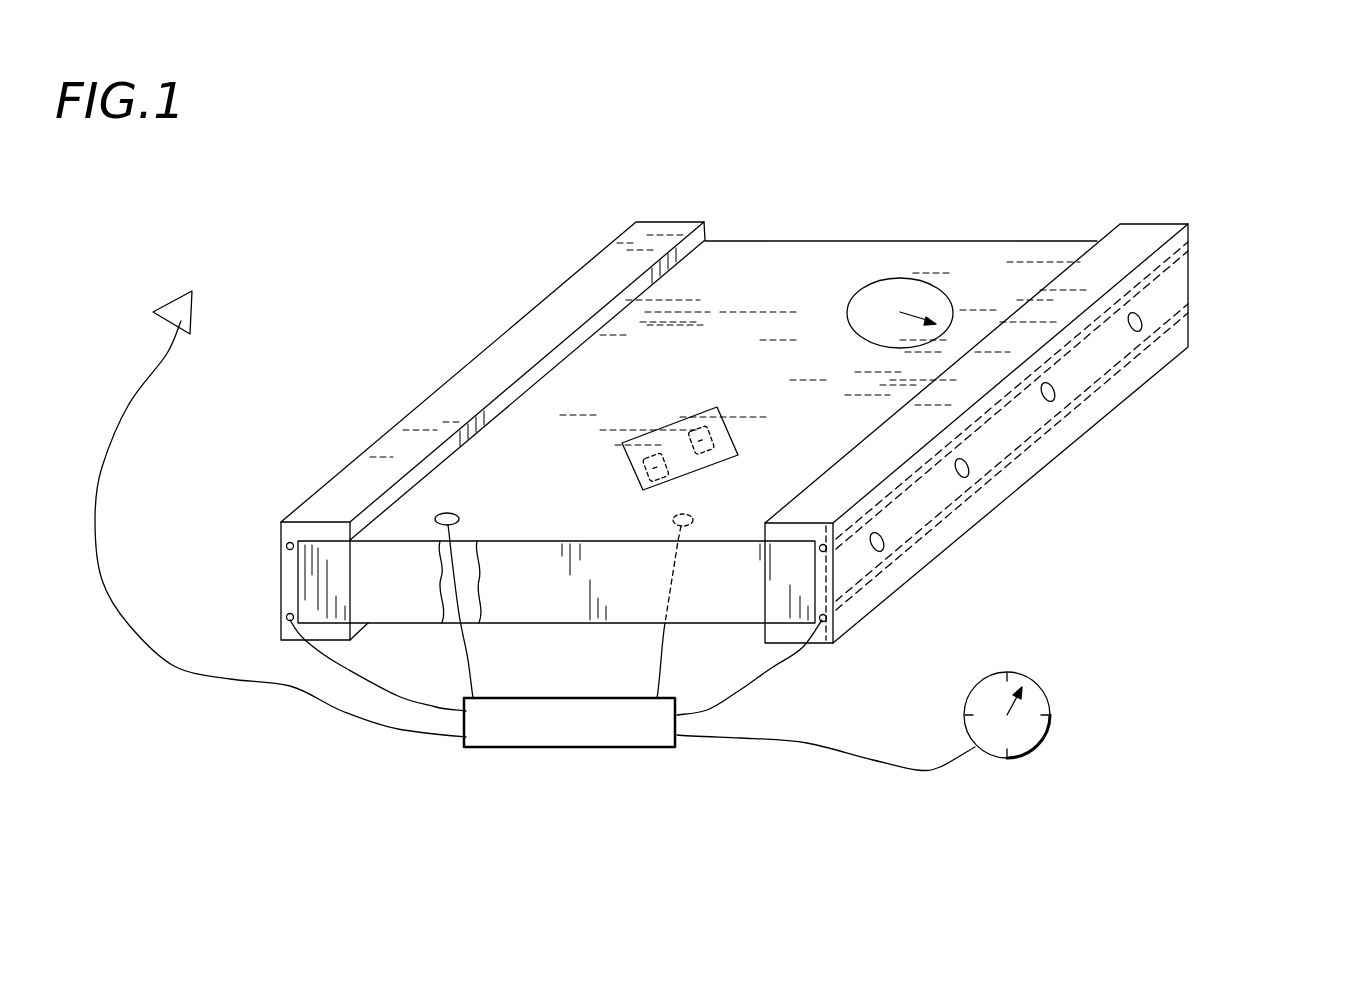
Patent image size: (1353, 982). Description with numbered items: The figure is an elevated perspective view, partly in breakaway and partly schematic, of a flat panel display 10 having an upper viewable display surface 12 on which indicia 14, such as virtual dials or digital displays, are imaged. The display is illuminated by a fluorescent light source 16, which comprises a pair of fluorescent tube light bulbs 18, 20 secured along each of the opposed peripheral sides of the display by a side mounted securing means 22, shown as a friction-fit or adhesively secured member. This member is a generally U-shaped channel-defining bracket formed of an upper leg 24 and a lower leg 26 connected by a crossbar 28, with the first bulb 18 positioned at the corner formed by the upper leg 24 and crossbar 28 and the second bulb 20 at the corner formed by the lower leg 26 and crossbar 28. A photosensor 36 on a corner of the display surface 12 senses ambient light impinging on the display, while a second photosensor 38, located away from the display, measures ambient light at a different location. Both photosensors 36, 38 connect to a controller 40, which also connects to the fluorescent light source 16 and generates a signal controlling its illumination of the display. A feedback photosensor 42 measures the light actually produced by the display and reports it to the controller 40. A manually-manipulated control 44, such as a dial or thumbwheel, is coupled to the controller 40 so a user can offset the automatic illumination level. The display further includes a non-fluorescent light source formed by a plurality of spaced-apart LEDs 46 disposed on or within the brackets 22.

The flat panel display 10 is at (1046, 210).
The viewable display surface 12 is at (750, 288).
The indicia 14 is at (715, 407).
The fluorescent light source 16 is at (175, 482).
The first elongated fluorescent bulb 18 is at (284, 542).
The second elongated fluorescent bulb 20 is at (286, 613).
The side mounted securing means 22 is at (552, 342).
The upper leg 24 is at (768, 520).
The lower leg 26 is at (765, 642).
The crossbar 28 is at (836, 630).
The photosensor 36 is at (457, 513).
The second photosensor 38 is at (192, 313).
The controller 40 is at (580, 750).
The feedback photosensor 42 is at (672, 520).
The manually-manipulated control 44 is at (1050, 700).
The LEDs 46 is at (1053, 392).